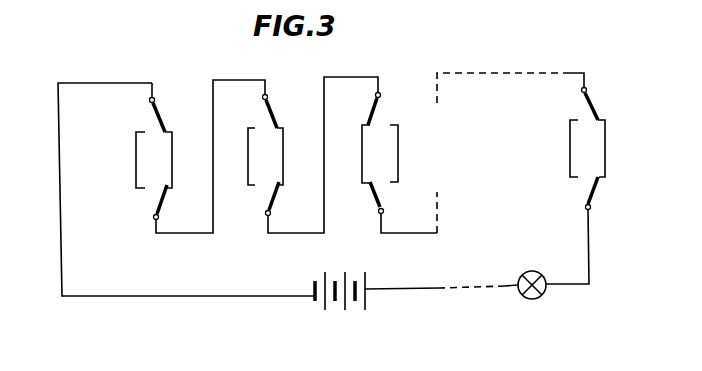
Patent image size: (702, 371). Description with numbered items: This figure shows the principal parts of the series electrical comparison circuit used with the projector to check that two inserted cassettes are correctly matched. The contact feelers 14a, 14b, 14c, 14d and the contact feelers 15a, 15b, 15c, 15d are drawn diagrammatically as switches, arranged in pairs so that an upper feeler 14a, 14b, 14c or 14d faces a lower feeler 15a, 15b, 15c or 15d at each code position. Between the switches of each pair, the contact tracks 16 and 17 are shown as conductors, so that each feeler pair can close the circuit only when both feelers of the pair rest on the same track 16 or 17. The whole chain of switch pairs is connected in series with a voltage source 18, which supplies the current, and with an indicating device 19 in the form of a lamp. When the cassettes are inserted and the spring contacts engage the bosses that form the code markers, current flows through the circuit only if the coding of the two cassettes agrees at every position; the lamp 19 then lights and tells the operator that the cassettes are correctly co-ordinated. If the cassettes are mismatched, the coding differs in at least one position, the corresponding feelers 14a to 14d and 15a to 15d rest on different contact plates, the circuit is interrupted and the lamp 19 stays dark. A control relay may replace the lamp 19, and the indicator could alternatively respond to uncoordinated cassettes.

The contact feeler 14a is at (153, 118).
The contact feeler 14b is at (268, 116).
The contact feeler 14c is at (376, 110).
The contact feeler 14d is at (588, 103).
The contact feeler 15a is at (158, 205).
The contact feeler 15b is at (271, 203).
The contact feeler 15c is at (378, 203).
The contact feeler 15d is at (592, 196).
The contact track 16 is at (136, 163).
The contact track 17 is at (172, 163).
The voltage source 18 is at (318, 300).
The indicating device 19 is at (543, 296).